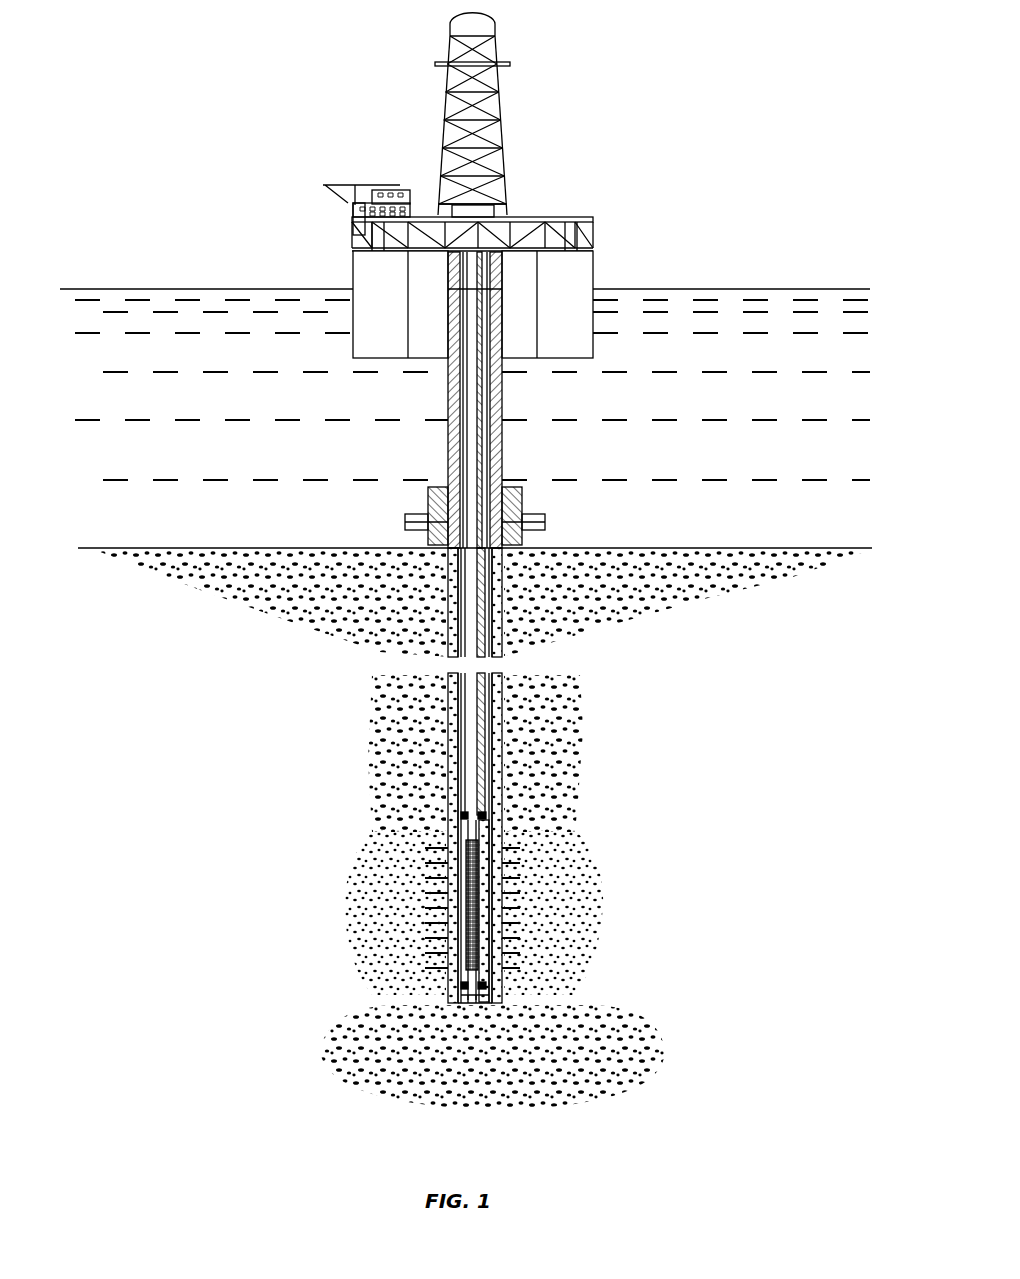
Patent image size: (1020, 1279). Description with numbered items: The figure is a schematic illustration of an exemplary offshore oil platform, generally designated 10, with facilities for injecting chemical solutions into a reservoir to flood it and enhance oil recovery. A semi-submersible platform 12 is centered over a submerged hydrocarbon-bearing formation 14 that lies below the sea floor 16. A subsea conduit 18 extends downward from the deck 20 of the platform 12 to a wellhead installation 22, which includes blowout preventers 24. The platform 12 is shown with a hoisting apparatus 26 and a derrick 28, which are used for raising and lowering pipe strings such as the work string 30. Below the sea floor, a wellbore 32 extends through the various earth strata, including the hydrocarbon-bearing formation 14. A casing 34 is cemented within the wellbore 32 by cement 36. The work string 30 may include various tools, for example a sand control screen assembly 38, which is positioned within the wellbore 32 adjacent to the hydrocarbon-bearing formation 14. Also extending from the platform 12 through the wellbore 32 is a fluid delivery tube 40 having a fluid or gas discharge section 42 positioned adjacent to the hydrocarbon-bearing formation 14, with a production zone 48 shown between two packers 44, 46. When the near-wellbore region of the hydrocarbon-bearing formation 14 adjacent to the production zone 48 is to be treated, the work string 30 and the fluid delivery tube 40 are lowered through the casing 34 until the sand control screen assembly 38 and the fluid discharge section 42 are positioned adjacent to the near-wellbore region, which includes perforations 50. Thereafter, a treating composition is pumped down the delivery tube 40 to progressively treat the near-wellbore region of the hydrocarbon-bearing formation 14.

The offshore oil platform 10 is at (285, 113).
The semi-submersible platform 12 is at (593, 218).
The hydrocarbon-bearing formation 14 is at (375, 890).
The sea floor 16 is at (712, 550).
The subsea conduit 18 is at (447, 452).
The deck 20 is at (590, 250).
The wellhead installation 22 is at (428, 505).
The blowout preventers 24 is at (545, 526).
The hoisting apparatus 26 is at (478, 197).
The derrick 28 is at (496, 49).
The work string 30 is at (483, 455).
The wellbore 32 is at (492, 720).
The casing 34 is at (448, 730).
The cement 36 is at (492, 750).
The sand control screen assembly 38 is at (466, 915).
The fluid delivery tube 40 is at (489, 775).
The fluid discharge section 42 is at (485, 988).
The packer 44 is at (490, 815).
The packer 46 is at (492, 984).
The production zone 48 is at (490, 840).
The perforations 50 is at (440, 962).